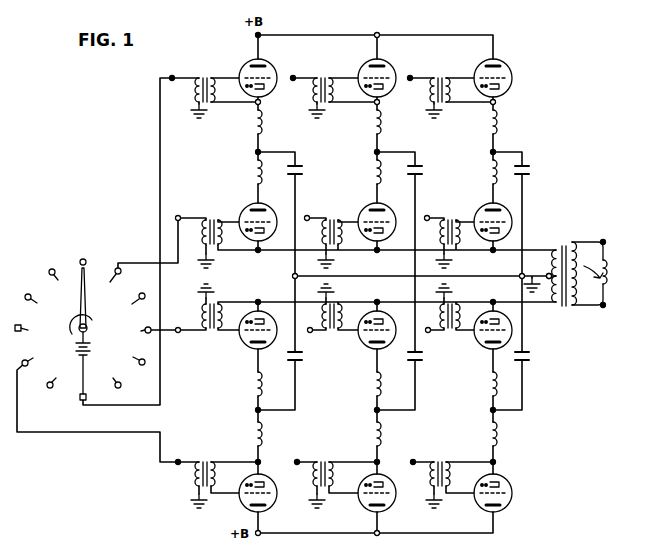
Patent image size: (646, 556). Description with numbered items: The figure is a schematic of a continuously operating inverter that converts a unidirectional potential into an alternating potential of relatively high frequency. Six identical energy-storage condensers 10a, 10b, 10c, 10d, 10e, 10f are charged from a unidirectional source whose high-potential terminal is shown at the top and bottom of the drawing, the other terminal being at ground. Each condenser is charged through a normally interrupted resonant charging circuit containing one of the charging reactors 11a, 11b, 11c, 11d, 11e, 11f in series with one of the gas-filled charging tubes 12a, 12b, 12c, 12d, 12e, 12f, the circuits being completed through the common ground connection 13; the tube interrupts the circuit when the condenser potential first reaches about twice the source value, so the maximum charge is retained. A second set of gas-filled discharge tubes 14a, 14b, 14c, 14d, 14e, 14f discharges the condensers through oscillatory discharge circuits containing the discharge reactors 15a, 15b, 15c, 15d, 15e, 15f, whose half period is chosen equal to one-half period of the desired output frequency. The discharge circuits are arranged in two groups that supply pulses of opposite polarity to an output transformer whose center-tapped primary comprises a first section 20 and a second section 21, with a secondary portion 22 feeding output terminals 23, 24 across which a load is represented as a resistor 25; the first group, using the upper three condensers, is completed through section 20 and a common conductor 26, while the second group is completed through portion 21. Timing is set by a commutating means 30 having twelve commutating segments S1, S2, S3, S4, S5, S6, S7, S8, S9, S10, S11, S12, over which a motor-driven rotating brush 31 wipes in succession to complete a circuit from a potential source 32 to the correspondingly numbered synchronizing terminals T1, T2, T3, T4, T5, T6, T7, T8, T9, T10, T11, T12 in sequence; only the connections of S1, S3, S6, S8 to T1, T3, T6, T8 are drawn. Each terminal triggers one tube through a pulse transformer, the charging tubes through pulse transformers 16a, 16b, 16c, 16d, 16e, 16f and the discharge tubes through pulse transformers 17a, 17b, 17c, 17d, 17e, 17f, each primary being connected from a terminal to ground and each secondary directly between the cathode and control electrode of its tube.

The condenser 10a is at (301, 167).
The condenser 10b is at (421, 167).
The condenser 10c is at (530, 167).
The condenser 10d is at (297, 361).
The condenser 10e is at (418, 361).
The condenser 10f is at (530, 361).
The charging reactor 11a is at (264, 128).
The charging reactor 11b is at (383, 128).
The charging reactor 11c is at (499, 128).
The charging reactor 11d is at (253, 435).
The charging reactor 11e is at (371, 436).
The charging reactor 11f is at (487, 438).
The vapor electric-discharge device 12a is at (244, 66).
The vapor electric-discharge device 12b is at (364, 66).
The vapor electric-discharge device 12c is at (504, 66).
The vapor electric-discharge device 12d is at (270, 508).
The vapor electric-discharge device 12e is at (387, 511).
The vapor electric-discharge device 12f is at (503, 511).
The common ground connection 13 is at (534, 294).
The vapor electric-discharge device 14a is at (247, 211).
The vapor electric-discharge device 14b is at (366, 206).
The vapor electric-discharge device 14c is at (482, 206).
The vapor electric-discharge device 14d is at (248, 313).
The vapor electric-discharge device 14e is at (378, 310).
The vapor electric-discharge device 14f is at (498, 310).
The discharge reactor 15a is at (254, 170).
The discharge reactor 15b is at (372, 168).
The discharge reactor 15c is at (488, 166).
The discharge reactor 15d is at (253, 388).
The discharge reactor 15e is at (371, 389).
The discharge reactor 15f is at (487, 389).
The pulse transformer 16a is at (204, 77).
The pulse transformer 16b is at (322, 77).
The pulse transformer 16c is at (441, 77).
The pulse transformer 16d is at (204, 490).
The pulse transformer 16e is at (324, 490).
The pulse transformer 16f is at (442, 490).
The pulse transformer 17a is at (212, 219).
The pulse transformer 17b is at (333, 219).
The pulse transformer 17c is at (452, 217).
The pulse transformer 17d is at (212, 330).
The pulse transformer 17e is at (333, 330).
The pulse transformer 17f is at (451, 330).
The first section of primary winding 20 is at (588, 273).
The second section of primary winding 21 is at (565, 307).
The secondary portion 22 is at (578, 279).
The output terminal 23 is at (601, 240).
The output terminal 24 is at (602, 307).
The resistor 25 is at (607, 272).
The common conductor 26 is at (546, 274).
The commutating means 30 is at (83, 315).
The rotating brush 31 is at (86, 300).
The potential source 32 is at (77, 348).
The commutating segment S1 is at (109, 281).
The commutating segment S2 is at (131, 303).
The commutating segment S3 is at (138, 333).
The commutating segment S4 is at (131, 356).
The commutating segment S5 is at (111, 377).
The commutating segment S6 is at (90, 387).
The commutating segment S7 is at (58, 377).
The commutating segment S8 is at (35, 356).
The commutating segment S9 is at (30, 333).
The commutating segment S10 is at (41, 303).
The commutating segment S11 is at (63, 281).
The commutating segment S12 is at (86, 253).
The synchronizing terminal T1 is at (178, 215).
The synchronizing terminal T2 is at (410, 77).
The synchronizing terminal T3 is at (178, 327).
The synchronizing terminal T4 is at (413, 460).
The synchronizing terminal T5 is at (307, 215).
The synchronizing terminal T6 is at (172, 77).
The synchronizing terminal T7 is at (310, 327).
The synchronizing terminal T8 is at (178, 460).
The synchronizing terminal T9 is at (427, 215).
The synchronizing terminal T10 is at (293, 77).
The synchronizing terminal T11 is at (428, 327).
The synchronizing terminal T12 is at (297, 460).